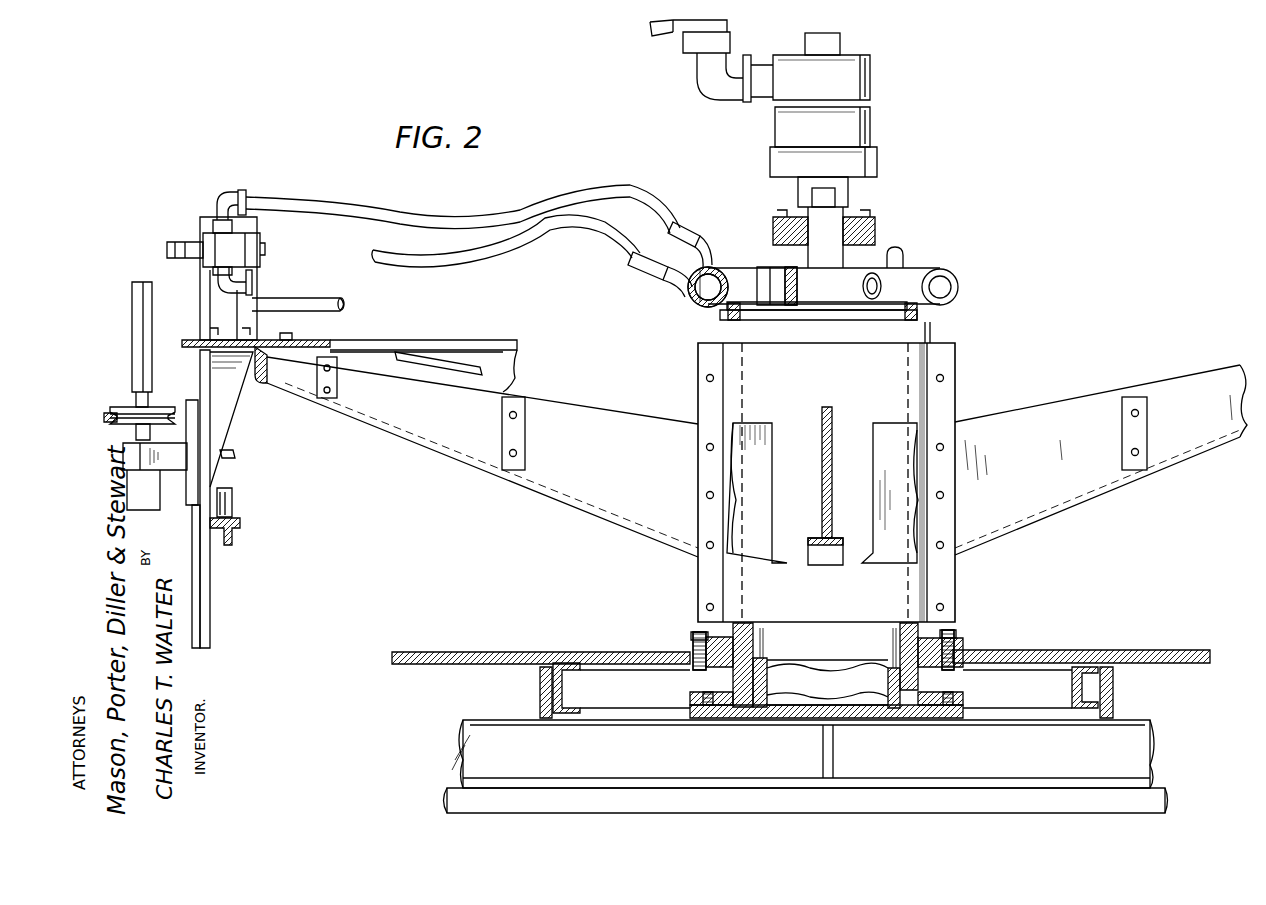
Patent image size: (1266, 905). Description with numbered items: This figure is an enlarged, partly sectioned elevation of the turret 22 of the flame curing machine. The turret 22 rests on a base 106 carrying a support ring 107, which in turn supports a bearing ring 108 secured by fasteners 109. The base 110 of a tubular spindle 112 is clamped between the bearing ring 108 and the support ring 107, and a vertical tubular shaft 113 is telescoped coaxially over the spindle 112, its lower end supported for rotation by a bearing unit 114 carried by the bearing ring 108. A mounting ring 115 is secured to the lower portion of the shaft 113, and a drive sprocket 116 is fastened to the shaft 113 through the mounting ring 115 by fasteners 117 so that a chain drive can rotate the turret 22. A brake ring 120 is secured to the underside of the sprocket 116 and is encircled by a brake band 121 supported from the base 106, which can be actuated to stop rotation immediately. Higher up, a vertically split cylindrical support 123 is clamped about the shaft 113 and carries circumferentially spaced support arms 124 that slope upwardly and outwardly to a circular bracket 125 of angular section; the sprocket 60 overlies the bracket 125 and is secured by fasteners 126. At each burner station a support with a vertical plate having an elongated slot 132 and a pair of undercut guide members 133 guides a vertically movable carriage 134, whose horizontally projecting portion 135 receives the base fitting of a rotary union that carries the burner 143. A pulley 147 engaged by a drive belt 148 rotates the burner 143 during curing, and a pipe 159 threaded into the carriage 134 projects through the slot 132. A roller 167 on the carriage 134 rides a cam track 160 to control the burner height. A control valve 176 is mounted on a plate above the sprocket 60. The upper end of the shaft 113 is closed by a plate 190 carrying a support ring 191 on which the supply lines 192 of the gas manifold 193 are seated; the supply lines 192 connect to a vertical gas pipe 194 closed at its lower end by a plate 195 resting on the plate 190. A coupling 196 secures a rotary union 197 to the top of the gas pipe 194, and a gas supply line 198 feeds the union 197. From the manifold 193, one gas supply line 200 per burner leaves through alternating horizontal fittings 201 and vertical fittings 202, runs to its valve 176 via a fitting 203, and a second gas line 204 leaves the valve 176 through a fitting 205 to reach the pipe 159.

The turret 22 is at (997, 378).
The sprocket 60 is at (265, 343).
The base 106 is at (930, 780).
The support ring 107 is at (935, 718).
The bearing ring 108 is at (960, 700).
The fasteners 109 is at (677, 640).
The base of spindle 110 is at (805, 705).
The spindle 112 is at (900, 675).
The tubular shaft 113 is at (902, 625).
The bearing unit 114 is at (930, 705).
The mounting ring 115 is at (965, 647).
The drive sprocket 116 is at (1052, 652).
The fasteners 117 is at (697, 632).
The brake ring 120 is at (580, 683).
The brake band 121 is at (540, 696).
The vertically split cylindrical support 123 is at (932, 353).
The support arms 124 is at (605, 410).
The circular bracket 125 is at (270, 372).
The fasteners 126 is at (292, 336).
The elongated vertical slot 132 is at (212, 575).
The undercut guide members 133 is at (192, 555).
The carriage 134 is at (192, 405).
The horizontally projecting portion 135 is at (125, 466).
The burner 143 is at (131, 344).
The pulley 147 is at (120, 408).
The drive belt 148 is at (106, 415).
The pipe 159 is at (233, 452).
The cam track 160 is at (240, 535).
The roller 167 is at (232, 492).
The control valve 176 is at (250, 262).
The plate 190 is at (860, 310).
The support ring 191 is at (715, 307).
The supply lines 192 is at (735, 275).
The gas manifold 193 is at (945, 270).
The vertical gas pipe 194 is at (805, 258).
The plate 195 is at (838, 305).
The coupling 196 is at (862, 228).
The rotary union 197 is at (872, 125).
The gas supply line 198 is at (712, 80).
The gas supply lines 200 is at (655, 205).
The fittings 201 is at (665, 285).
The fittings 202 is at (710, 248).
The fitting 203 is at (233, 200).
The second gas line 204 is at (345, 300).
The fitting 205 is at (240, 295).